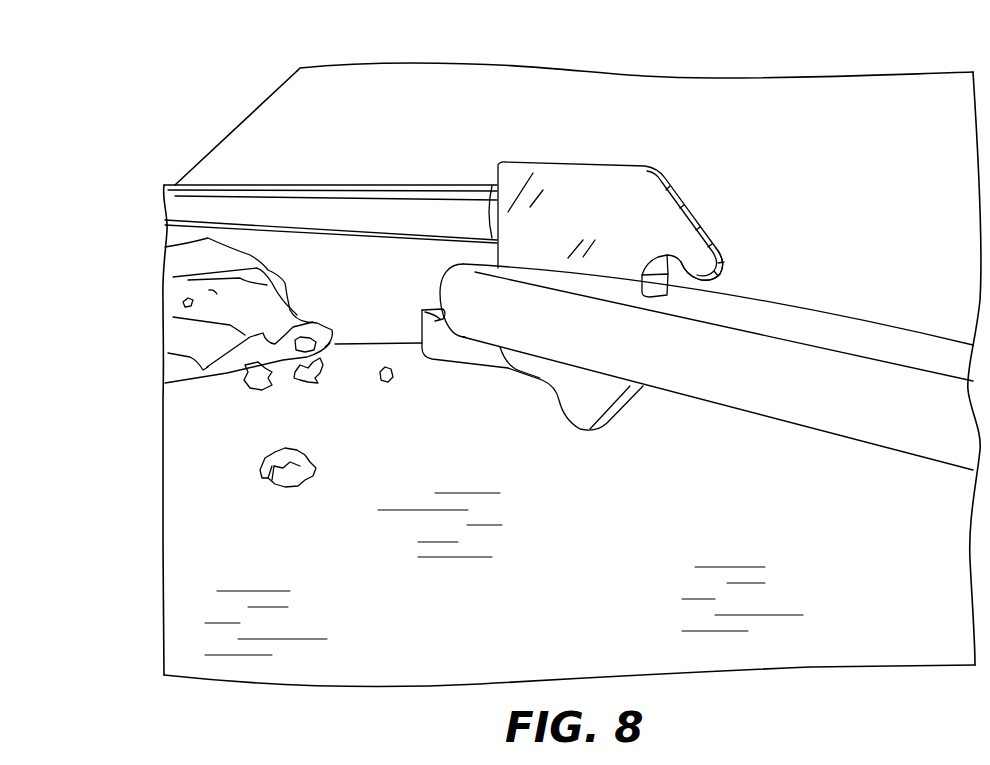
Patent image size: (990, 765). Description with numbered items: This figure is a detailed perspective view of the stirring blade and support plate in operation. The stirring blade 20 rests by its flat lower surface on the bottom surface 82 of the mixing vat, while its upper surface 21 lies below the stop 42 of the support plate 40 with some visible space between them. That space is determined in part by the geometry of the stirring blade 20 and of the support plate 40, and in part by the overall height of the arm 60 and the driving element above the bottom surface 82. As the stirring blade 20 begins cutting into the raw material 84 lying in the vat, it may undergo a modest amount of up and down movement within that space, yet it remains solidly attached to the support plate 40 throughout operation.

The stirring blade 20 is at (790, 383).
The upper surface of the stirring blade 21 is at (846, 332).
The support plate 40 is at (657, 220).
The stop 42 is at (720, 269).
The arm 60 is at (430, 211).
The bottom surface 82 is at (561, 589).
The raw material 84 is at (263, 314).